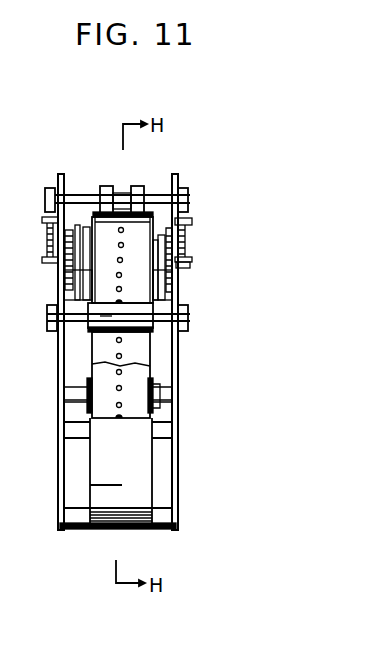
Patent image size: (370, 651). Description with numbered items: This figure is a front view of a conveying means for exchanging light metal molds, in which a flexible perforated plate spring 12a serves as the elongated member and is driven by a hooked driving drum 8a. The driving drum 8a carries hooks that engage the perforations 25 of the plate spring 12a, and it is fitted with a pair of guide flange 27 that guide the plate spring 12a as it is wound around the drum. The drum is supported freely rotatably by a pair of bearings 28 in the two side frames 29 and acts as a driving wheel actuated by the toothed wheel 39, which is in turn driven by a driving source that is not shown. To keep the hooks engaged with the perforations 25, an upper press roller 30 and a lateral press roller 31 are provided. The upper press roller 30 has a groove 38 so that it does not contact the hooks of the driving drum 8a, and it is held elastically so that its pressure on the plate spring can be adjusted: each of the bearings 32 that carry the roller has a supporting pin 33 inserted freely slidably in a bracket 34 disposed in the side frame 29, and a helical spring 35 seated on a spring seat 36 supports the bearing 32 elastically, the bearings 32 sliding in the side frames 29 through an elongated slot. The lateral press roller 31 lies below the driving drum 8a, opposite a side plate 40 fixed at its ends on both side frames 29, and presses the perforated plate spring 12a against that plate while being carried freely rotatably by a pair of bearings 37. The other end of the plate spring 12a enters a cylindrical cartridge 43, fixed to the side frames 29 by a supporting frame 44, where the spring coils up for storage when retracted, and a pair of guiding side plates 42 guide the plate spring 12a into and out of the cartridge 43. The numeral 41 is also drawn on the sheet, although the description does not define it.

The driving drum 8a is at (68, 262).
The perforated plate spring 12a is at (92, 364).
The perforations 25 is at (122, 248).
The guide flange 27 is at (80, 284).
The bearings 28 is at (176, 268).
The side frames 29 is at (58, 176).
The upper press roller 30 is at (105, 186).
The lateral press roller 31 is at (90, 332).
The bearings 32 is at (48, 203).
The supporting pin 33 is at (192, 222).
The bracket 34 is at (186, 242).
The helical spring 35 is at (188, 259).
The spring seat 36 is at (188, 266).
The bearings 37 is at (188, 322).
The groove 38 is at (125, 193).
The toothed wheel 39 is at (50, 236).
The side plate 40 is at (50, 333).
The clamp member 41 is at (88, 410).
The guiding side plates 42 is at (156, 399).
The cylindrical cartridge 43 is at (88, 480).
The supporting frame 44 is at (150, 520).